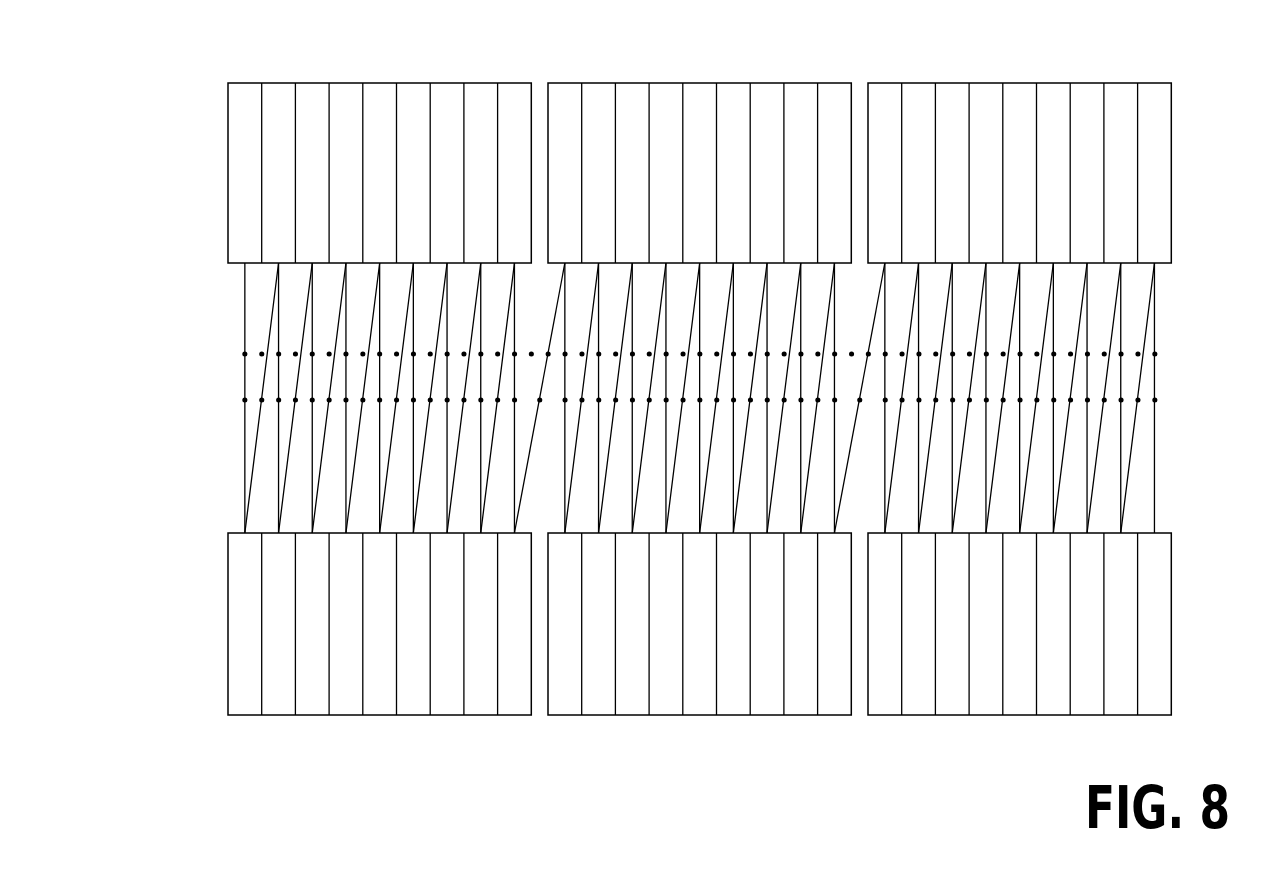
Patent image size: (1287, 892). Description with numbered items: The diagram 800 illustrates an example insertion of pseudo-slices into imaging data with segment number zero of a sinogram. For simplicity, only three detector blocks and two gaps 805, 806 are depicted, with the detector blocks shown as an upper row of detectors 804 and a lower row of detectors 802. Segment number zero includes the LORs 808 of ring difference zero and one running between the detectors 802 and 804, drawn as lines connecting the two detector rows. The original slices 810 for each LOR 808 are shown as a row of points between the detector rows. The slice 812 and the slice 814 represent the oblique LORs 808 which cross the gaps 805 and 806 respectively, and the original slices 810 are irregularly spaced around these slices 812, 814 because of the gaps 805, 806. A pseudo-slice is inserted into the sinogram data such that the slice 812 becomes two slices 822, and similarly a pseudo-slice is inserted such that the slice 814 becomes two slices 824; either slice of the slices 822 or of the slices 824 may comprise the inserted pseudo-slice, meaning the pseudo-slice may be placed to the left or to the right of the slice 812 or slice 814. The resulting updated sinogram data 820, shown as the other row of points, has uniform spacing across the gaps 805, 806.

The diagram 800 is at (1214, 56).
The detectors 802 is at (204, 620).
The detectors 804 is at (210, 168).
The gap 805 is at (535, 730).
The gap 806 is at (859, 730).
The LORs 808 is at (230, 468).
The original slices 810 is at (224, 400).
The slice 812 is at (536, 426).
The slice 814 is at (857, 417).
The updated sinogram data 820 is at (224, 355).
The two slices 822 is at (547, 336).
The two slices 824 is at (867, 336).